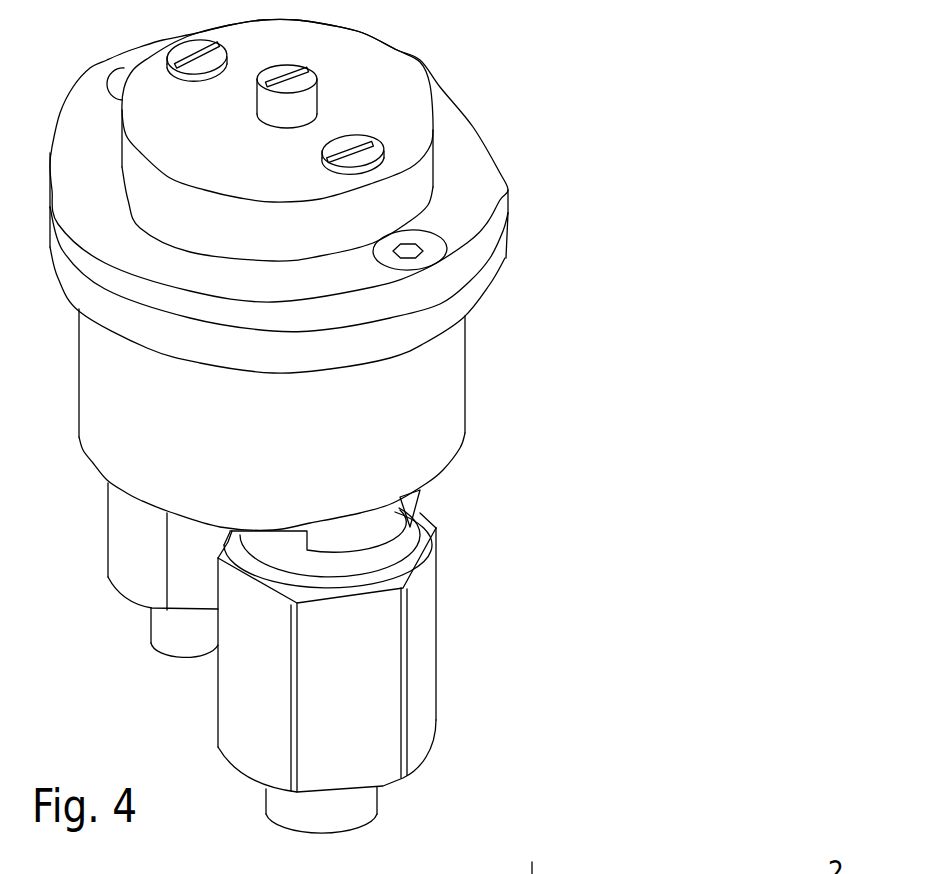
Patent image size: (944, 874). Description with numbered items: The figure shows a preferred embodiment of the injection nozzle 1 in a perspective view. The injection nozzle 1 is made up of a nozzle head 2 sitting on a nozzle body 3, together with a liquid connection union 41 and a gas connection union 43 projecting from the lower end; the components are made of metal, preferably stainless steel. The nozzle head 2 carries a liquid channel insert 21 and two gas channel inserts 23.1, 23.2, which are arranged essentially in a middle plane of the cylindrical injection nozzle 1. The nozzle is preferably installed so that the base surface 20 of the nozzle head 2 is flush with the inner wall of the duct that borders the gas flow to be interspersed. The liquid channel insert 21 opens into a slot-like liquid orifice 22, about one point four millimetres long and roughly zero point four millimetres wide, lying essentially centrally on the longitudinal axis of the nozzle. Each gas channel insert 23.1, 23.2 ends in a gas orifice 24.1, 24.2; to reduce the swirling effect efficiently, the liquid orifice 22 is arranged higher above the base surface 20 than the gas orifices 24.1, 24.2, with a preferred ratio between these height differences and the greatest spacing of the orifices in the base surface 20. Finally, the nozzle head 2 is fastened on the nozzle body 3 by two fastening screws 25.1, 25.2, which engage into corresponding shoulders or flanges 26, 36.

The injection nozzle 1 is at (579, 87).
The nozzle head 2 is at (466, 65).
The nozzle body 3 is at (520, 395).
The base surface 20 is at (370, 72).
The liquid channel insert 21 is at (273, 118).
The liquid orifice 22 is at (273, 80).
The gas channel insert 23.1 is at (205, 75).
The gas channel insert 23.2 is at (345, 174).
The gas orifice 24.1 is at (185, 58).
The gas orifice 24.2 is at (350, 143).
The fastening screw 25.1 is at (118, 80).
The fastening screw 25.2 is at (433, 247).
The shoulder or flange 26 is at (503, 212).
The shoulder or flange 36 is at (497, 257).
The liquid connection union 41 is at (480, 668).
The gas connection union 43 is at (91, 619).